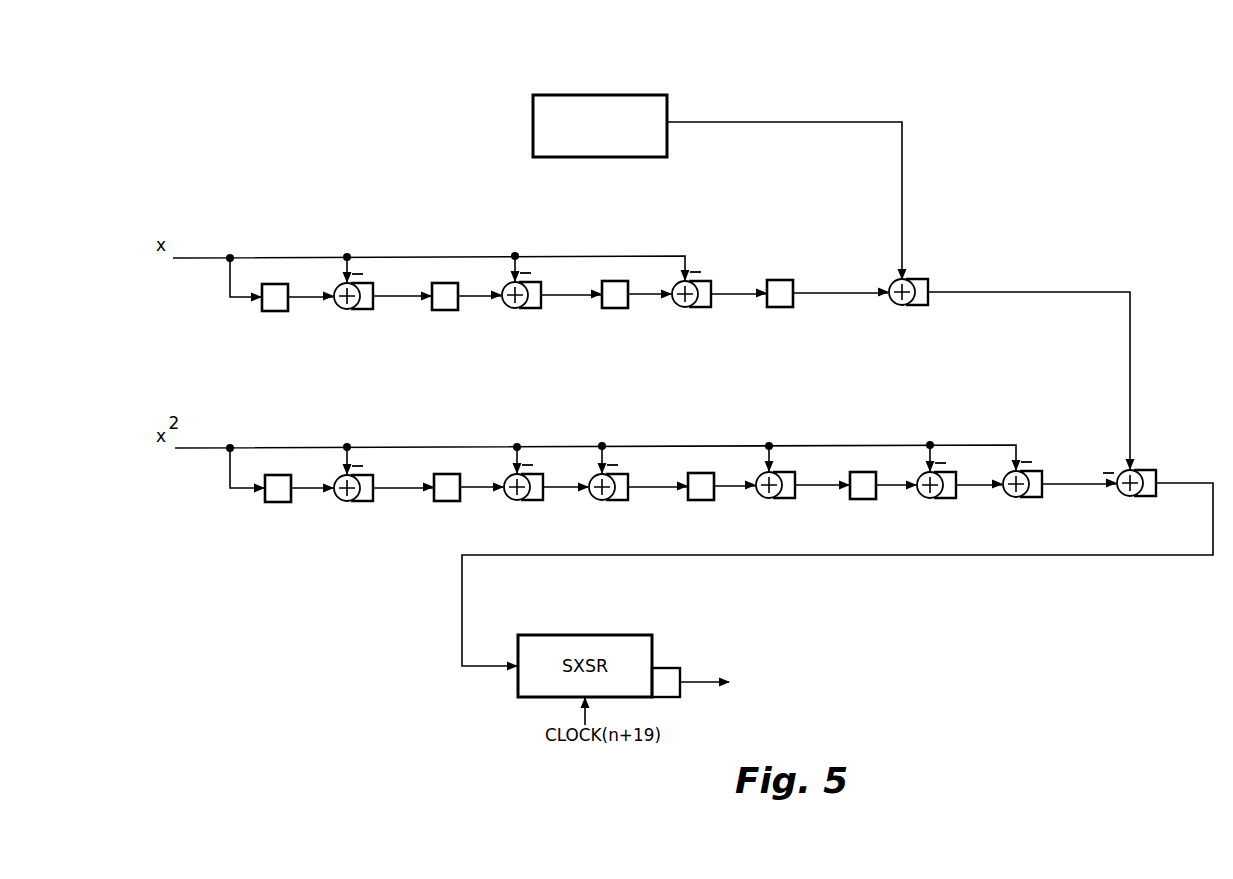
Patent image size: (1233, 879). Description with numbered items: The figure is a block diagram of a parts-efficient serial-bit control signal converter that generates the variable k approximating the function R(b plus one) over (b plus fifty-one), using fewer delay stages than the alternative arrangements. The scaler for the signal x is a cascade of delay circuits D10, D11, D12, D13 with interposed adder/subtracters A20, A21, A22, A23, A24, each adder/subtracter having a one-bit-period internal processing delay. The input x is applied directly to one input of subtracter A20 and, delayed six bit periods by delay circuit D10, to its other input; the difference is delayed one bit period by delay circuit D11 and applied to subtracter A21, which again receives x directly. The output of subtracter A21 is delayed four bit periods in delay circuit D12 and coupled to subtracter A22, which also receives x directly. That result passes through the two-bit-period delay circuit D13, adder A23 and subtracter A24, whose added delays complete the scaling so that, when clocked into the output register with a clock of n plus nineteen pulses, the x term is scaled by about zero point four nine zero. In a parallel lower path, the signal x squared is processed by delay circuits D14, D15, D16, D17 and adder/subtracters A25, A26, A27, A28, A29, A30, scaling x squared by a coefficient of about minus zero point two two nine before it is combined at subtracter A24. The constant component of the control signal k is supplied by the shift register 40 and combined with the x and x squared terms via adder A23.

The shift register 40 is at (600, 132).
The delay circuit D10 is at (277, 312).
The delay circuit D11 is at (446, 311).
The delay circuit D12 is at (617, 309).
The delay circuit D13 is at (782, 308).
The delay circuit D14 is at (280, 503).
The delay circuit D15 is at (449, 502).
The delay circuit D16 is at (703, 501).
The delay circuit D17 is at (865, 500).
The subtracter A20 is at (346, 307).
The subtracter A21 is at (514, 306).
The subtracter A22 is at (684, 305).
The adder A23 is at (901, 298).
The subtracter A24 is at (1129, 489).
The adder/subtracter A25 is at (346, 499).
The adder/subtracter A26 is at (516, 498).
The adder/subtracter A27 is at (601, 498).
The adder/subtracter A28 is at (768, 491).
The adder/subtracter A29 is at (929, 496).
The adder/subtracter A30 is at (1015, 495).